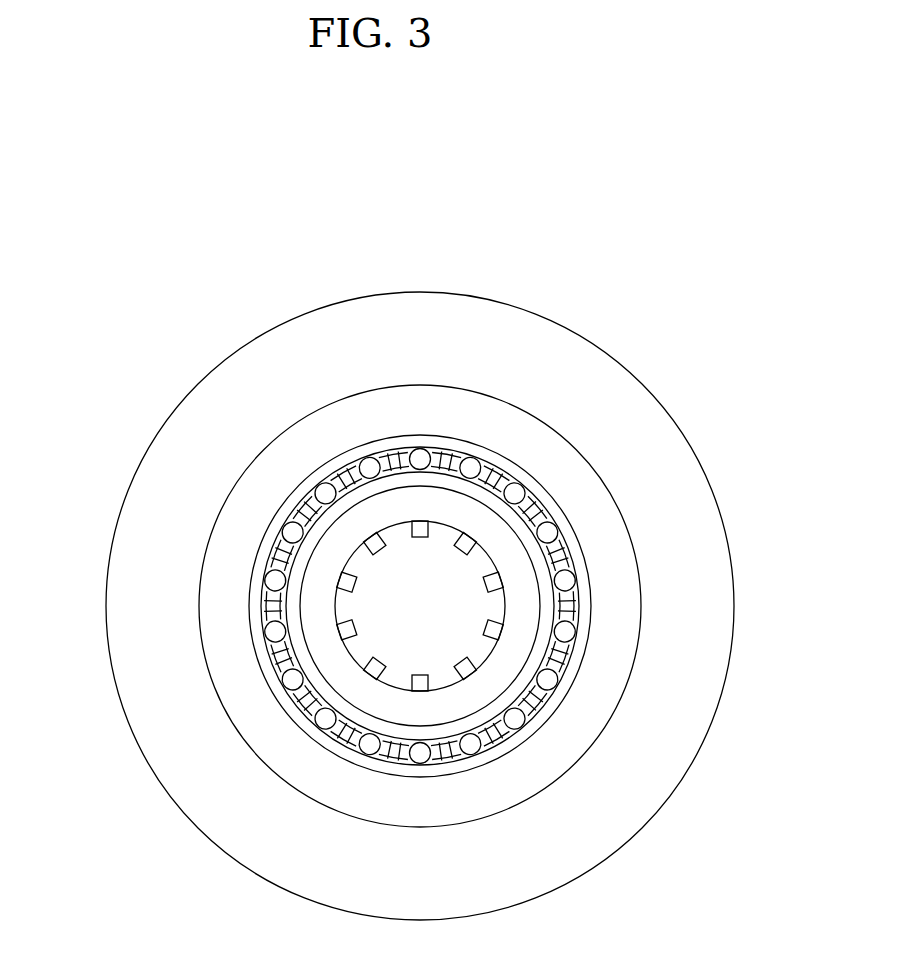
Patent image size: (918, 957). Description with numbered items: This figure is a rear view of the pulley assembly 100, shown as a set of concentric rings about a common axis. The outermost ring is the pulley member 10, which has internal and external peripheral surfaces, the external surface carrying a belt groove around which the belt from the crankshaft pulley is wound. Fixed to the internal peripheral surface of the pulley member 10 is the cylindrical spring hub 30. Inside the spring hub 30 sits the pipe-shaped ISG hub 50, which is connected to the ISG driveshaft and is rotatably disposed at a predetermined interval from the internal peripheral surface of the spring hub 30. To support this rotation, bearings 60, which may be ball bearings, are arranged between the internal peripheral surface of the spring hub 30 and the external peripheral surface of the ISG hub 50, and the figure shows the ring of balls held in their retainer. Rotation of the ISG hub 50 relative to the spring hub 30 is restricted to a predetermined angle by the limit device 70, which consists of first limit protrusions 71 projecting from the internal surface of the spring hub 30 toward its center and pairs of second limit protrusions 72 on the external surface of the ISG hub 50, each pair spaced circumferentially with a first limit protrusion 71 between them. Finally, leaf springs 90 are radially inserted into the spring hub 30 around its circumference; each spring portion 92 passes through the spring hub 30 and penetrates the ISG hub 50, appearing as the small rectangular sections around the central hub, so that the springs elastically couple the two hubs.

The pulley assembly 100 is at (162, 292).
The pulley member 10 is at (567, 325).
The spring hub 30 is at (462, 385).
The ISG hub 50 is at (399, 480).
The bearings 60 is at (412, 433).
The limit device 70 is at (290, 606).
The first limit protrusions 71 is at (267, 604).
The second limit protrusions 72 is at (277, 557).
The leaf springs 90 is at (455, 557).
The spring portion 92 is at (375, 667).